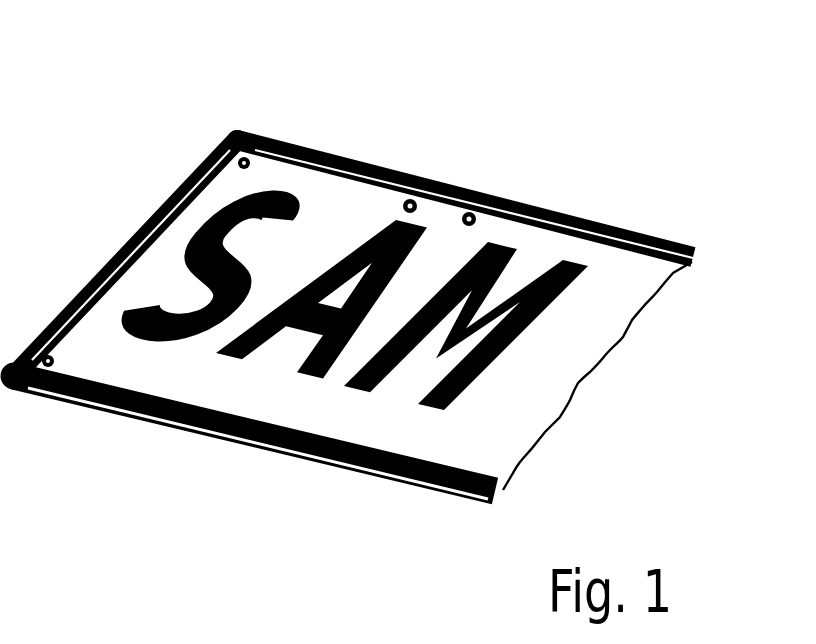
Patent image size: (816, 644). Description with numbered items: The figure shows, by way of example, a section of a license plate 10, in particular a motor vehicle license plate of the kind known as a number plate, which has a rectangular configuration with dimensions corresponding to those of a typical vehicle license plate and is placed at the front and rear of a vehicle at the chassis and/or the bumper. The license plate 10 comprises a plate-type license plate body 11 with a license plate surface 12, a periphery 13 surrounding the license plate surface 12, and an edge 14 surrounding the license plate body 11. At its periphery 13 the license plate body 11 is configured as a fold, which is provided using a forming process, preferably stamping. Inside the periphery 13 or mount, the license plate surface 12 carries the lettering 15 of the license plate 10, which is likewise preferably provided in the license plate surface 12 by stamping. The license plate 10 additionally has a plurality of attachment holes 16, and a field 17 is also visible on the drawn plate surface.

The license plate 10 is at (360, 280).
The license plate body 11 is at (333, 200).
The license plate surface 12 is at (360, 428).
The periphery 13 is at (103, 262).
The edge 14 is at (347, 333).
The lettering 15 is at (532, 268).
The attachment holes 16 is at (248, 133).
The text field 17 is at (494, 451).